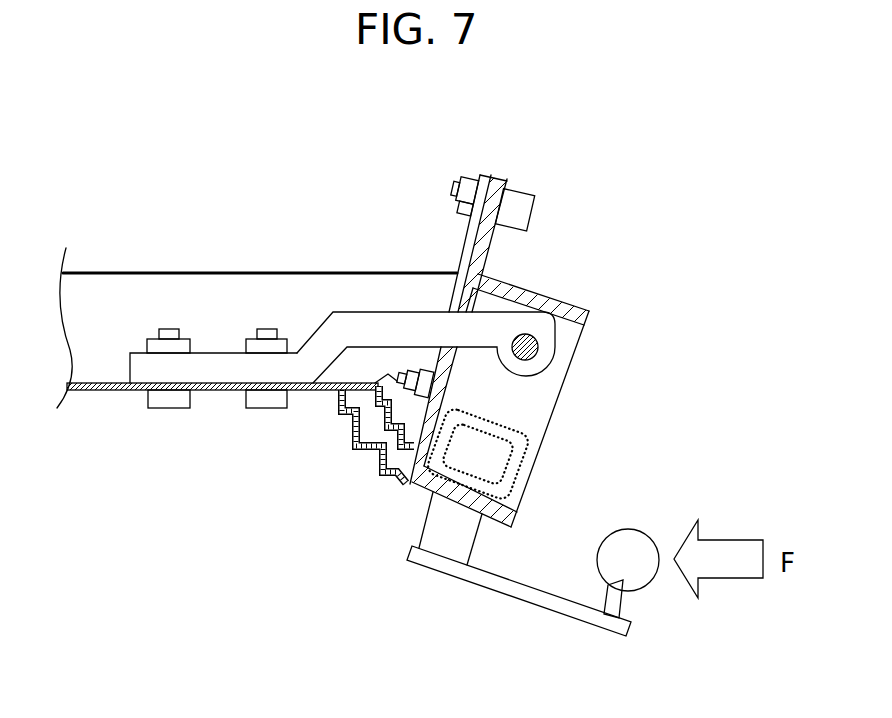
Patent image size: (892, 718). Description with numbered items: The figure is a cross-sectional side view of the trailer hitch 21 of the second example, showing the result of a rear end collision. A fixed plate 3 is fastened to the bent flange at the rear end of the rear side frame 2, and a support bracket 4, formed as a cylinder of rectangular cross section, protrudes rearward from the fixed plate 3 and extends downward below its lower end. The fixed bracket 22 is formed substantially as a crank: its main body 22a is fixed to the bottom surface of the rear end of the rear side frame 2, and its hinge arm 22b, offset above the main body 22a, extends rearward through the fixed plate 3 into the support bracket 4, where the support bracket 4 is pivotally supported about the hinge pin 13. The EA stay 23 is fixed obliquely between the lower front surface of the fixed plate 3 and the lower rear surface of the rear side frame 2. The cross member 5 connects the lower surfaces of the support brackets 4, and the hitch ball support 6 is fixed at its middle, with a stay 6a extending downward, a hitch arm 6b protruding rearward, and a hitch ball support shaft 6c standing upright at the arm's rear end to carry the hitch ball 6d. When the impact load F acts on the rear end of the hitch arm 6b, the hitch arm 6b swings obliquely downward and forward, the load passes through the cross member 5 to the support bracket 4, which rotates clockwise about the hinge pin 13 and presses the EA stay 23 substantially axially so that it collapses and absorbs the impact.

The rear side frame 2 is at (131, 273).
The fixed plate 3 is at (489, 268).
The support bracket 4 is at (561, 392).
The cross member 5 is at (540, 462).
The hitch ball support 6 is at (450, 598).
The stay 6a is at (432, 527).
The hitch arm 6b is at (580, 634).
The hitch ball support shaft 6c is at (622, 600).
The hitch ball 6d is at (597, 559).
The hinge pin 13 is at (540, 346).
The trailer hitch 21 is at (585, 230).
The fixed bracket 22 is at (323, 161).
The main body 22a is at (216, 353).
The hinge arm 22b is at (378, 312).
The EA stay 23 is at (352, 418).